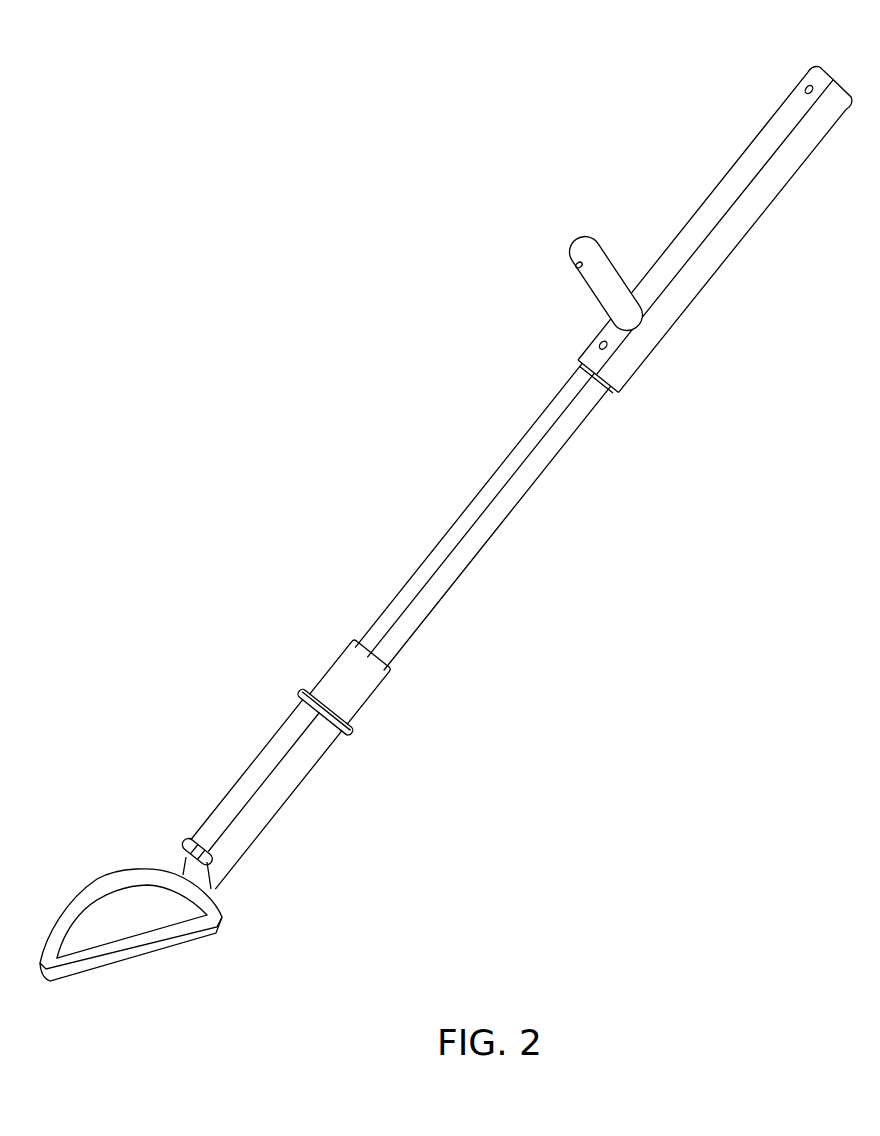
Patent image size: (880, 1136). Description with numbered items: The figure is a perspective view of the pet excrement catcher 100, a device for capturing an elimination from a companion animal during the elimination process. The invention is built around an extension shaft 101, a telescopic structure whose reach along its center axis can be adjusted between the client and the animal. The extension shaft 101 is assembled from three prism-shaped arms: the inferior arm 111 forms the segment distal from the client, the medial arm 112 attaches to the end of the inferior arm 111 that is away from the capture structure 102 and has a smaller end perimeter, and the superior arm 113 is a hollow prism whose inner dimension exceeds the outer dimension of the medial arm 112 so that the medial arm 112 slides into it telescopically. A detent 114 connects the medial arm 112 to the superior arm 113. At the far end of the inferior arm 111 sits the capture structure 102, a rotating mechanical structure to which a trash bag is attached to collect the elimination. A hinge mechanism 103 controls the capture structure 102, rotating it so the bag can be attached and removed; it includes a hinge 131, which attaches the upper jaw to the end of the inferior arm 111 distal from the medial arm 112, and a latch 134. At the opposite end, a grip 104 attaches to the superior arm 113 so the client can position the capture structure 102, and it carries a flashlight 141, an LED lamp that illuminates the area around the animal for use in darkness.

The pet excrement catcher 100 is at (247, 120).
The extension shaft 101 is at (670, 177).
The capture structure 102 is at (143, 977).
The hinge mechanism 103 is at (183, 846).
The grip 104 is at (590, 240).
The inferior arm 111 is at (297, 792).
The medial arm 112 is at (482, 543).
The superior arm 113 is at (715, 267).
The detent 114 is at (598, 346).
The hinge 131 is at (215, 853).
The latch 134 is at (803, 90).
The flashlight 141 is at (578, 268).